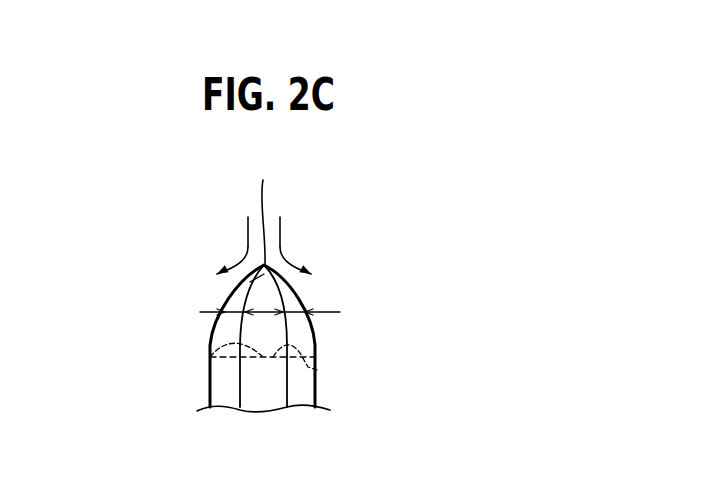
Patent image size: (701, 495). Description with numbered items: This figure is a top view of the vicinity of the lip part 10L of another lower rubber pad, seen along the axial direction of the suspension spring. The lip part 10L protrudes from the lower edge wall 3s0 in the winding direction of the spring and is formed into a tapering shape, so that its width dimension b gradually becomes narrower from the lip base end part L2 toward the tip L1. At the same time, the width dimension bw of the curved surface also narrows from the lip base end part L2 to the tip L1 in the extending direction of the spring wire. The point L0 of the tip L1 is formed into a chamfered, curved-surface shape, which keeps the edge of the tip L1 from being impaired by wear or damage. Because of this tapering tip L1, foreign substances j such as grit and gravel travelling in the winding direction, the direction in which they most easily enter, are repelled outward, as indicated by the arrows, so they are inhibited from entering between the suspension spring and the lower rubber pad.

The lip part 10L is at (210, 330).
The lower edge wall 3s0 is at (317, 370).
The point of the tip L0 is at (262, 208).
The tip L1 is at (240, 286).
The lip base end part L2 is at (210, 357).
The width dimension b is at (270, 299).
The width dimension of the curved surface bw is at (265, 314).
The foreign substances j is at (264, 215).